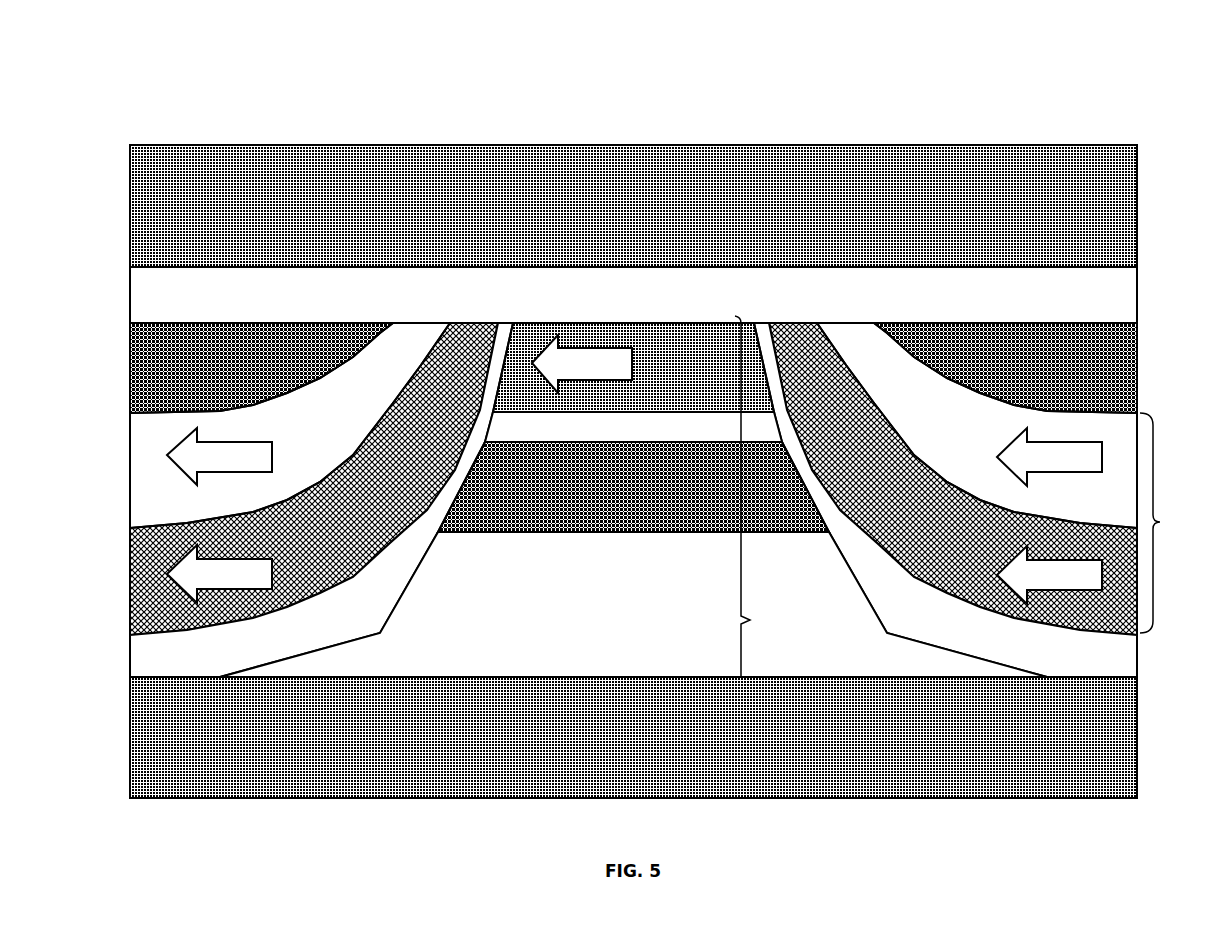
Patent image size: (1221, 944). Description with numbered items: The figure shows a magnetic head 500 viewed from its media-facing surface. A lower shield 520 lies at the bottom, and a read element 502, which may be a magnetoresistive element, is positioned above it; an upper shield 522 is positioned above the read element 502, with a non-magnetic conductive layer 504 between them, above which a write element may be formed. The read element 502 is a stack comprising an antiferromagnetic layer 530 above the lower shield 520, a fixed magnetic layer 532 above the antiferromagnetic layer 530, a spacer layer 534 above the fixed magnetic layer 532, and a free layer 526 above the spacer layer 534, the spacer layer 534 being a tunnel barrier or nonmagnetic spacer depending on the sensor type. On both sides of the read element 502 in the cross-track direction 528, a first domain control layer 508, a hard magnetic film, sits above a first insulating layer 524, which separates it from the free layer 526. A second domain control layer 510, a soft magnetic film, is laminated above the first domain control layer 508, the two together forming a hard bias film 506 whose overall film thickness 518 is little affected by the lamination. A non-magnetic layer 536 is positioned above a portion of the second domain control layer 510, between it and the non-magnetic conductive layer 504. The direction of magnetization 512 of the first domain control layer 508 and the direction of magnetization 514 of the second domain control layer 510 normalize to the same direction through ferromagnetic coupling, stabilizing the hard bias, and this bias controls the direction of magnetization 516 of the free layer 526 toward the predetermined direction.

The magnetic head 500 is at (529, 117).
The read element 502 is at (757, 629).
The non-magnetic conductive layer 504 is at (617, 302).
The hard bias film 506 is at (1169, 523).
The first domain control layer 508 is at (291, 537).
The second domain control layer 510 is at (291, 427).
The direction of magnetization 512 is at (216, 583).
The direction of magnetization 514 is at (216, 466).
The direction of magnetization 516 is at (586, 372).
The overall film thickness 518 is at (95, 413).
The lower shield 520 is at (617, 746).
The upper shield 522 is at (617, 203).
The first insulating layer 524 is at (321, 626).
The free layer 526 is at (657, 371).
The cross-track direction 528 is at (738, 816).
The antiferromagnetic layer 530 is at (617, 621).
The fixed magnetic layer 532 is at (617, 494).
The spacer layer 534 is at (617, 434).
The non-magnetic layer 536 is at (201, 374).